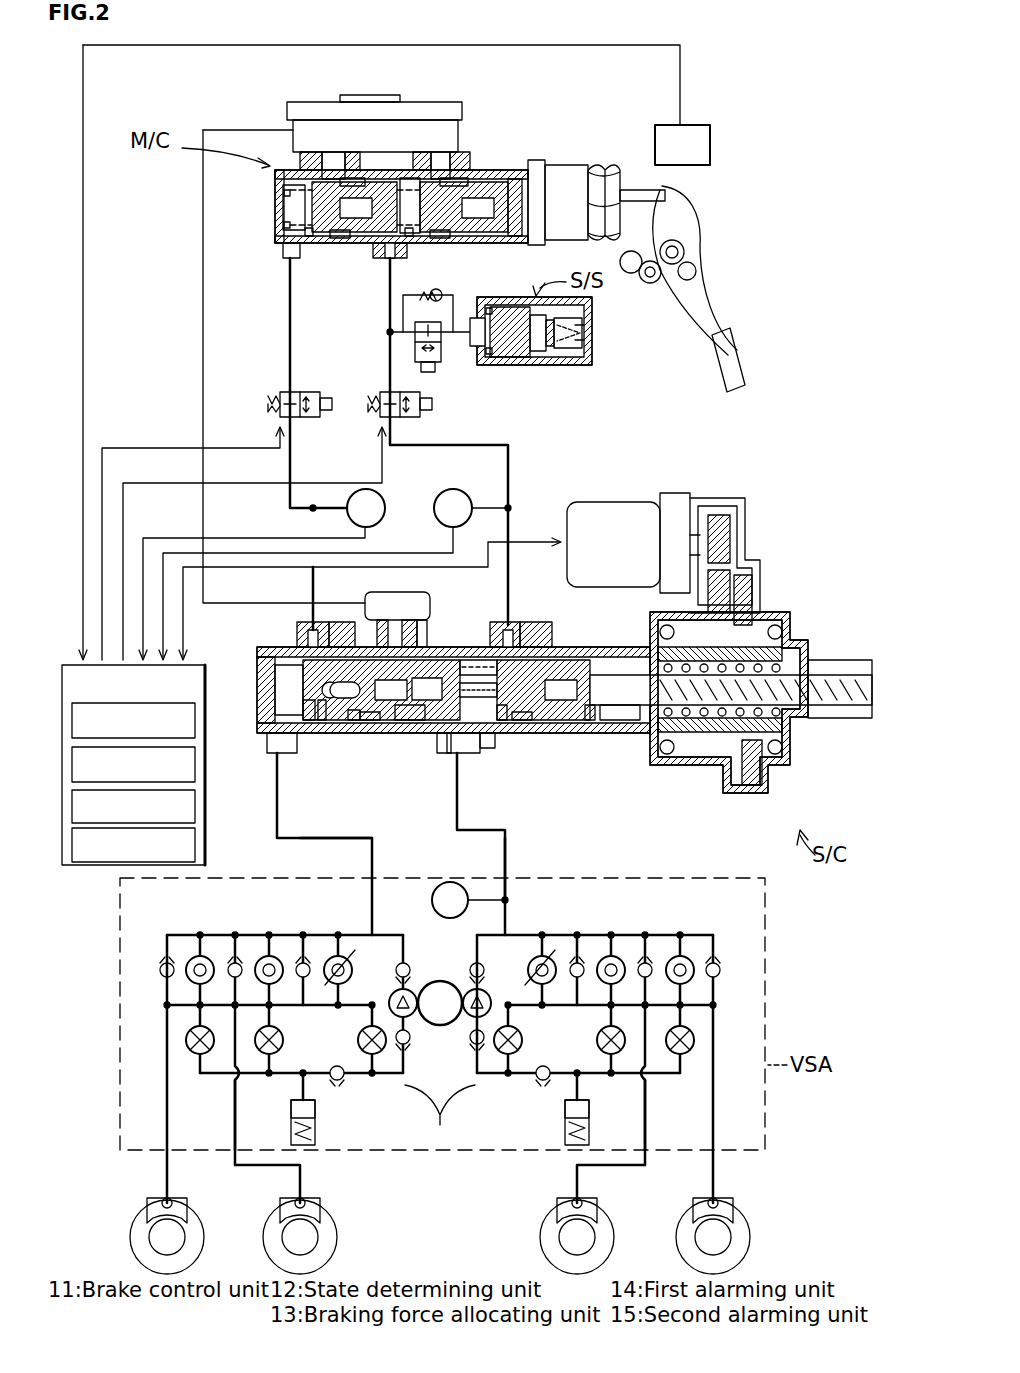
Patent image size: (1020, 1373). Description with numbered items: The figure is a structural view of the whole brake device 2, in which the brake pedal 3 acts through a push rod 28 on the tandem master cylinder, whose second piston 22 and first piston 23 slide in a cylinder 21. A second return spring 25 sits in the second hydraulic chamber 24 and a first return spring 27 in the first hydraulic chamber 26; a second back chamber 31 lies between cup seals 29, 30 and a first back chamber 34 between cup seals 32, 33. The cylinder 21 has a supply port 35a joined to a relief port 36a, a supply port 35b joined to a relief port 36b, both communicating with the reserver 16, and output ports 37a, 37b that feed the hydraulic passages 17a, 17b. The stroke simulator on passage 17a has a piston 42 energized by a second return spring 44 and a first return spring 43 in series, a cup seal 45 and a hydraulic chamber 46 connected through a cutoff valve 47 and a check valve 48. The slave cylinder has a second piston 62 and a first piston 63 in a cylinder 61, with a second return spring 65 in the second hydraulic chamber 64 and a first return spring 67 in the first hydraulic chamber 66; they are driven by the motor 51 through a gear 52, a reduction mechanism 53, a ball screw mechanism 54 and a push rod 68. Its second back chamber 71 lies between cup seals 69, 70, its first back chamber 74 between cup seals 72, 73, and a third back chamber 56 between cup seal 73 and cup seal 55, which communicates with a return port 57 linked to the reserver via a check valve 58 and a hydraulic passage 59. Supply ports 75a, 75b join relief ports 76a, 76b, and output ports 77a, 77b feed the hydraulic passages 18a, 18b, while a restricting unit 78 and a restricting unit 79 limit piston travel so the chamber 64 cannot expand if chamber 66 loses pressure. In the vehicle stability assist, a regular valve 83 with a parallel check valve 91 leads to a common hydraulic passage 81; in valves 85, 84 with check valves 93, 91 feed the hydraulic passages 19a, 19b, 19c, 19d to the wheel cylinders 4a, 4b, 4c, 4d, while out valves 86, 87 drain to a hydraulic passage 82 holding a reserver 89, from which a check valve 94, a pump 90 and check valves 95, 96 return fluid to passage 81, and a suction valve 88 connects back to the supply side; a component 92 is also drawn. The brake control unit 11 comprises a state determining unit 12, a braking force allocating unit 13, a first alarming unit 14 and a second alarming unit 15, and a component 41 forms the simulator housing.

The brake device 2 is at (803, 100).
The brake pedal 3 is at (735, 350).
The wheel cylinder 4a is at (742, 1198).
The wheel cylinder 4b is at (605, 1198).
The wheel cylinder 4c is at (328, 1198).
The wheel cylinder 4d is at (195, 1198).
The brake control unit 11 is at (72, 865).
The state determining unit 12 is at (195, 720).
The braking force allocating unit 13 is at (195, 764).
The first alarming unit 14 is at (195, 806).
The second alarming unit 15 is at (195, 845).
The reserver 16 is at (290, 115).
The hydraulic passage 17a is at (390, 344).
The hydraulic passage 17b is at (290, 334).
The hydraulic passage 18a is at (505, 855).
The hydraulic passage 18b is at (372, 860).
The hydraulic passage 19a is at (722, 1172).
The hydraulic passage 19b is at (575, 1175).
The hydraulic passage 19c is at (305, 1165).
The hydraulic passage 19d is at (160, 1172).
The cylinder 21 is at (492, 170).
The second piston 22 is at (452, 207).
The first piston 23 is at (343, 207).
The second hydraulic chamber 24 is at (398, 90).
The second return spring 25 is at (440, 238).
The first hydraulic chamber 26 is at (282, 178).
The first return spring 27 is at (283, 208).
The push rod 28 is at (560, 175).
The cup seal 29 is at (412, 180).
The cup seal 30 is at (536, 200).
The second back chamber 31 is at (515, 178).
The cup seal 32 is at (318, 236).
The cup seal 33 is at (380, 258).
The first back chamber 34 is at (345, 238).
The supply port 35a is at (455, 180).
The supply port 35b is at (350, 180).
The relief port 36a is at (438, 172).
The relief port 36b is at (330, 172).
The output port 37a is at (410, 238).
The output port 37b is at (286, 250).
The simulator cylinder 41 is at (565, 365).
The piston 42 is at (512, 357).
The first return spring 43 is at (592, 336).
The second return spring 44 is at (560, 357).
The cup seal 45 is at (535, 352).
The hydraulic chamber 46 is at (490, 355).
The cutoff valve 47 is at (441, 350).
The check valve 48 is at (445, 296).
The motor 51 is at (605, 502).
The gear 52 is at (730, 520).
The reduction mechanism 53 is at (748, 575).
The ball screw mechanism 54 is at (790, 612).
The cup seal 55 is at (442, 740).
The third back chamber 56 is at (410, 722).
The return port 57 is at (415, 638).
The check valve 58 is at (395, 585).
The hydraulic passage 59 is at (203, 240).
The cylinder 61 is at (612, 647).
The second piston 62 is at (573, 690).
The first piston 63 is at (400, 690).
The second hydraulic chamber 64 is at (478, 660).
The second return spring 65 is at (488, 748).
The first hydraulic chamber 66 is at (275, 680).
The first return spring 67 is at (288, 753).
The push rod 68 is at (848, 680).
The cup seal 69 is at (505, 720).
The cup seal 70 is at (620, 725).
The second back chamber 71 is at (590, 722).
The cup seal 72 is at (312, 722).
The cup seal 73 is at (358, 720).
The first back chamber 74 is at (368, 722).
The supply port 75a is at (545, 640).
The supply port 75b is at (342, 625).
The relief port 76a is at (510, 622).
The relief port 76b is at (297, 634).
The output port 77a is at (465, 755).
The output port 77b is at (270, 755).
The restricting unit 78 is at (525, 722).
The restricting unit 79 is at (326, 720).
The hydraulic passage 81 is at (257, 935).
The hydraulic passage 82 is at (250, 1078).
The regular valve 83 is at (348, 957).
The in valve 84 is at (280, 957).
The in valve 85 is at (195, 957).
The out valve 86 is at (195, 1055).
The out valve 87 is at (283, 1048).
The suction valve 88 is at (360, 1034).
The reserver 89 is at (315, 1132).
The pump 90 is at (412, 1020).
The check valve 91 is at (308, 962).
The check valve 92 is at (233, 960).
The check valve 93 is at (160, 966).
The check valve 94 is at (338, 1082).
The check valve 95 is at (440, 1109).
The check valve 96 is at (450, 962).